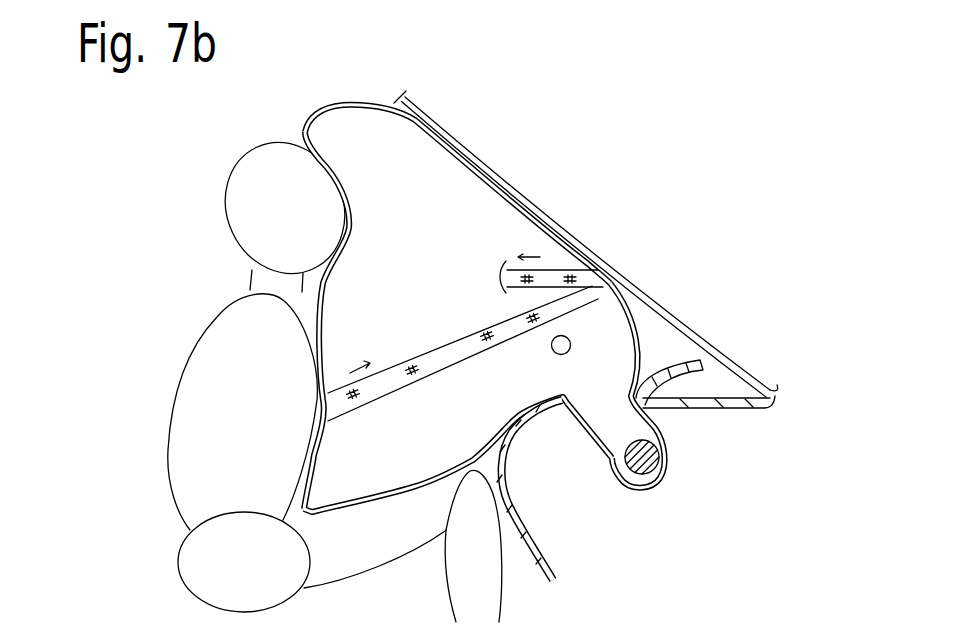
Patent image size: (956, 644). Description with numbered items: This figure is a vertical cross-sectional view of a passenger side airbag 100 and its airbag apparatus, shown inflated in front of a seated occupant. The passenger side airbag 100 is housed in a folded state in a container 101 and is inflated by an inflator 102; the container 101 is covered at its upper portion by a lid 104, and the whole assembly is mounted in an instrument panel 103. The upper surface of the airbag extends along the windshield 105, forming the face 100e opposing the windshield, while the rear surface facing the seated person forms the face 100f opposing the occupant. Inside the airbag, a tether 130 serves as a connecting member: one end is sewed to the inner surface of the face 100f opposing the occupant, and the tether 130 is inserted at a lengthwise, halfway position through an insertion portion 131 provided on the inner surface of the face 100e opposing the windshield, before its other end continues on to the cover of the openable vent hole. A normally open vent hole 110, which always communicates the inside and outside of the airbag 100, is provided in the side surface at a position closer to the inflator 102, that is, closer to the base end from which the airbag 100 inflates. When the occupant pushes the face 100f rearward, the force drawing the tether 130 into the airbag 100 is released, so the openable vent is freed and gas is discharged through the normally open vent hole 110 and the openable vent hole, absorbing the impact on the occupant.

The passenger side airbag 100 is at (484, 290).
The face opposing the windshield 100e is at (537, 222).
The face opposing the occupant 100f is at (331, 290).
The container 101 is at (612, 470).
The inflator 102 is at (670, 461).
The instrument panel 103 is at (508, 462).
The lid 104 is at (660, 374).
The windshield 105 is at (664, 307).
The normally open vent hole 110 is at (553, 351).
The tether 130 is at (453, 347).
The insertion portion 131 is at (602, 296).